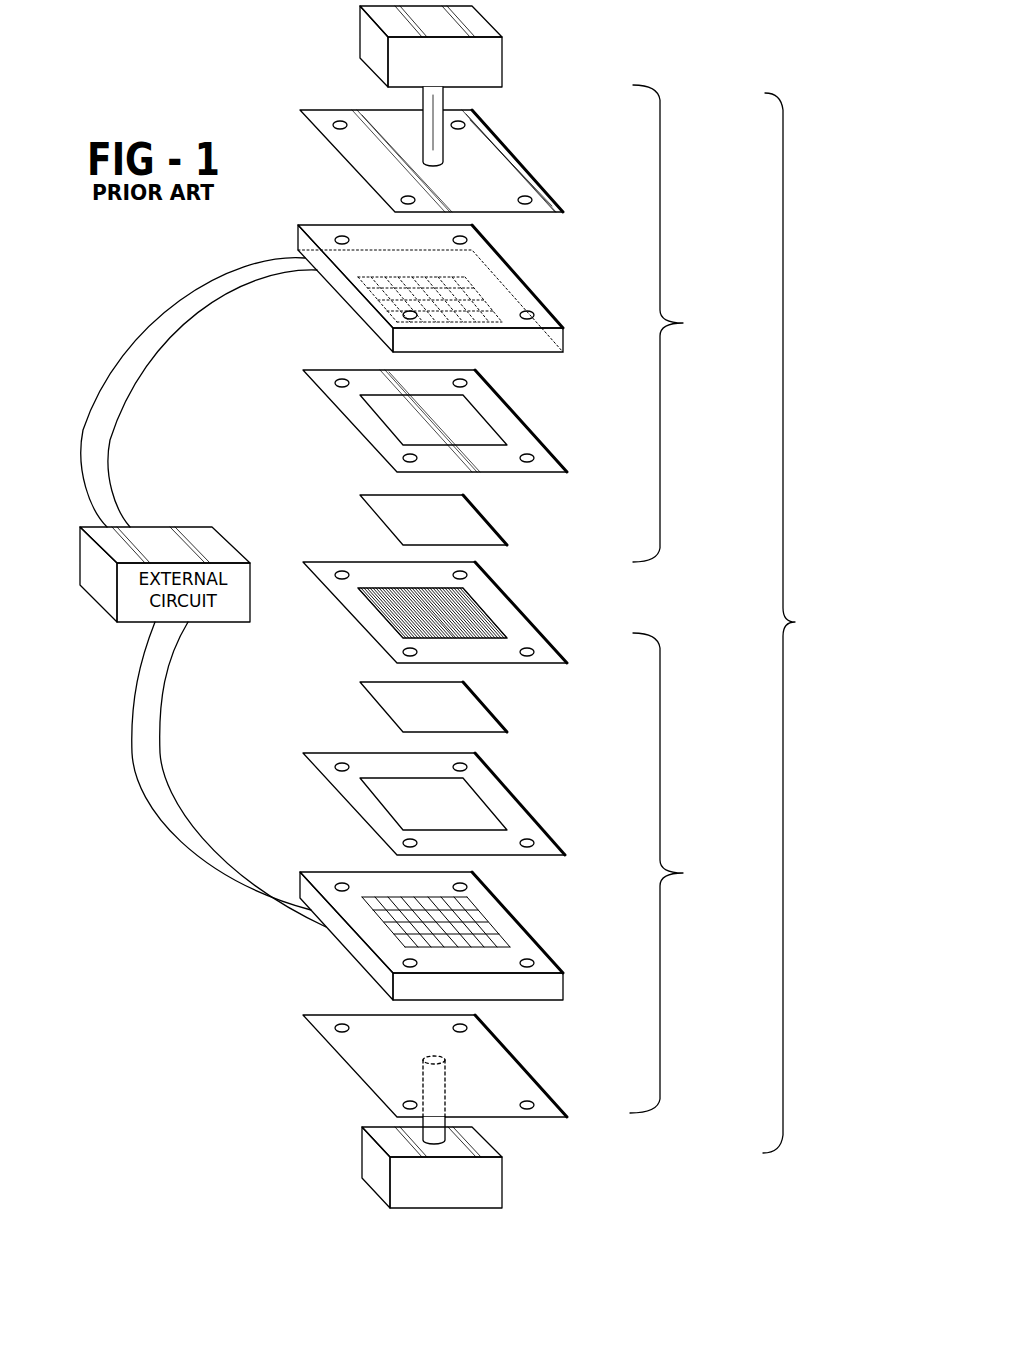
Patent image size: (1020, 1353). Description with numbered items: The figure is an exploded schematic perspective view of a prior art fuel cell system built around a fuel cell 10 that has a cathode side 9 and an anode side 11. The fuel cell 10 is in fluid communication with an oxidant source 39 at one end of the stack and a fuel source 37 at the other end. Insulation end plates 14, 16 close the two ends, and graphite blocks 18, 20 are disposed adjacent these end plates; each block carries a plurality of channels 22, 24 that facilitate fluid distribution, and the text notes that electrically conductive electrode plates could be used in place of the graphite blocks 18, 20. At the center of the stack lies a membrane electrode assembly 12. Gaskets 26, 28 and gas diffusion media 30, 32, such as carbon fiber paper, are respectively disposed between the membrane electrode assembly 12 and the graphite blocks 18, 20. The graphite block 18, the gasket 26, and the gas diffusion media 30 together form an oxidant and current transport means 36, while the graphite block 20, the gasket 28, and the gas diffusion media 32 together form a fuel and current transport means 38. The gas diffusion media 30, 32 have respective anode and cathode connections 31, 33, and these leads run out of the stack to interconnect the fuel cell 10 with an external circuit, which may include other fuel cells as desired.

The cathode side 9 is at (783, 227).
The fuel cell 10 is at (797, 623).
The anode side 11 is at (783, 877).
The membrane electrode assembly 12 is at (515, 599).
The insulation end plate 14 is at (517, 1055).
The insulation end plate 16 is at (523, 165).
The graphite block 18 is at (448, 936).
The graphite block 20 is at (452, 288).
The channels 22 is at (468, 915).
The channels 24 is at (358, 318).
The gasket 26 is at (535, 817).
The gasket 28 is at (523, 422).
The gas diffusion media 30 is at (490, 733).
The anode connection 31 is at (157, 742).
The gas diffusion media 32 is at (478, 523).
The cathode connection 33 is at (97, 390).
The oxidant and current transport means 36 is at (675, 873).
The fuel source 37 is at (503, 1188).
The fuel and current transport means 38 is at (676, 323).
The oxidant source 39 is at (503, 63).